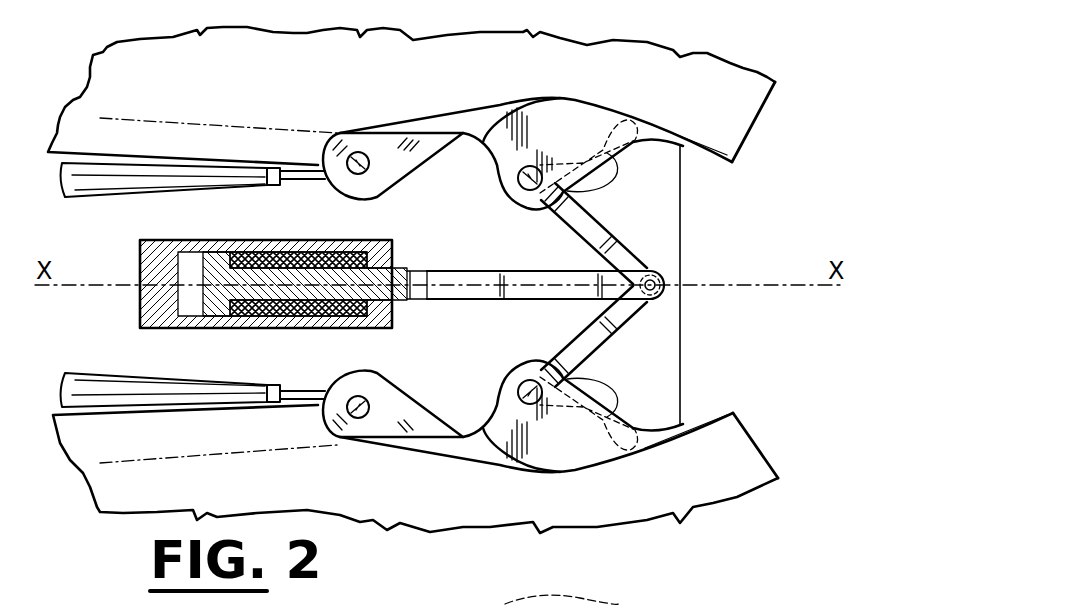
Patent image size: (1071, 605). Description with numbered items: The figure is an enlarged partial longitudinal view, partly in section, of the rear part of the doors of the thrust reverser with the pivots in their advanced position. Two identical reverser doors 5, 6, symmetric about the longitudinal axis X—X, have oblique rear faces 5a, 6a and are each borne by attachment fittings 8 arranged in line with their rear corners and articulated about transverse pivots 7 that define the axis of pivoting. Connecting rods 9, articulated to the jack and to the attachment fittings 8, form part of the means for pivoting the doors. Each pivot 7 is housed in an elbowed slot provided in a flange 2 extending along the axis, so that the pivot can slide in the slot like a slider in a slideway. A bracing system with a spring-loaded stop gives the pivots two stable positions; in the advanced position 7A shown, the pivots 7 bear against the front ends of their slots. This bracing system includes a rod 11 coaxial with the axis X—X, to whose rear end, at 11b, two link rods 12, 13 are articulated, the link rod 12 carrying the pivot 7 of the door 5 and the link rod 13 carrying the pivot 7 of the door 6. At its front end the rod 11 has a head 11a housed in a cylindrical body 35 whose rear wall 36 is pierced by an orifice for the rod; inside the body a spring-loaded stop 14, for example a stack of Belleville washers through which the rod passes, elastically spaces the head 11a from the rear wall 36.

The flange 2 is at (444, 391).
The reverser door 5 is at (693, 72).
The rear face 5a is at (762, 105).
The reverser door 6 is at (87, 468).
The rear face 6a is at (760, 447).
The transverse pivot 7 is at (518, 179).
The advanced position 7A is at (589, 156).
The attachment fitting 8 is at (377, 168).
The connecting rod 9 is at (97, 198).
The rod 11 is at (447, 277).
The head 11a is at (222, 258).
The articulation 11b is at (660, 285).
The link rod 12 is at (587, 227).
The link rod 13 is at (590, 337).
The spring-loaded stop 14 is at (275, 318).
The cylindrical body 35 is at (147, 305).
The rear wall 36 is at (396, 317).